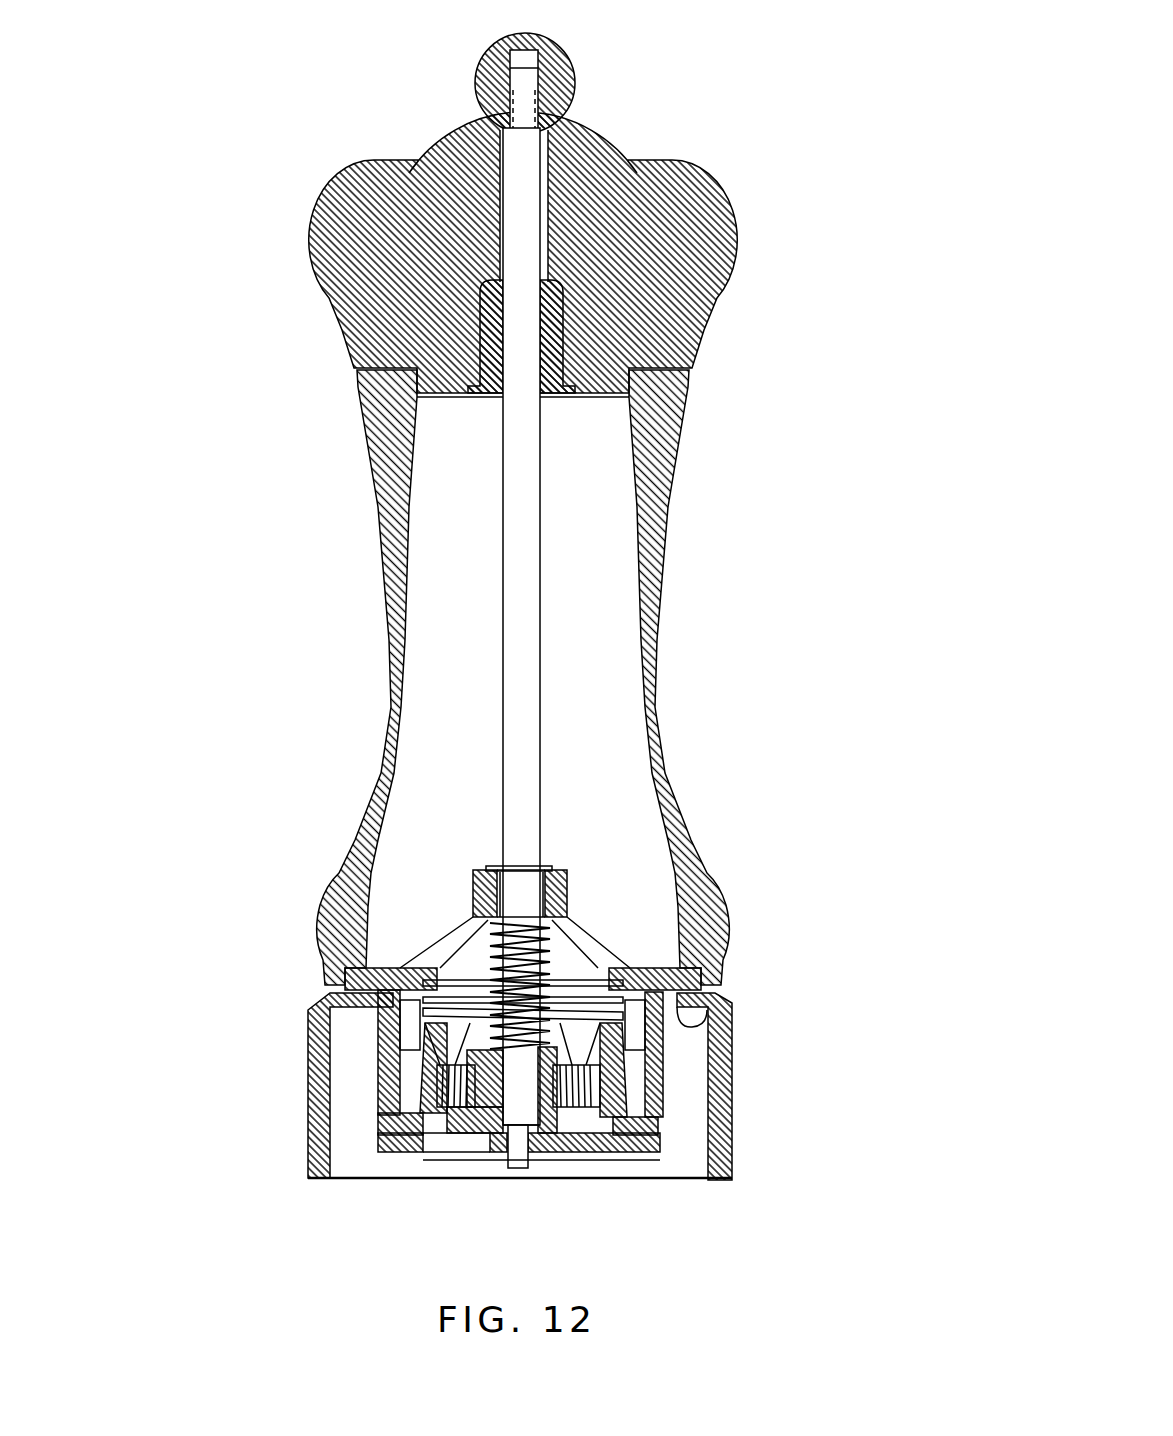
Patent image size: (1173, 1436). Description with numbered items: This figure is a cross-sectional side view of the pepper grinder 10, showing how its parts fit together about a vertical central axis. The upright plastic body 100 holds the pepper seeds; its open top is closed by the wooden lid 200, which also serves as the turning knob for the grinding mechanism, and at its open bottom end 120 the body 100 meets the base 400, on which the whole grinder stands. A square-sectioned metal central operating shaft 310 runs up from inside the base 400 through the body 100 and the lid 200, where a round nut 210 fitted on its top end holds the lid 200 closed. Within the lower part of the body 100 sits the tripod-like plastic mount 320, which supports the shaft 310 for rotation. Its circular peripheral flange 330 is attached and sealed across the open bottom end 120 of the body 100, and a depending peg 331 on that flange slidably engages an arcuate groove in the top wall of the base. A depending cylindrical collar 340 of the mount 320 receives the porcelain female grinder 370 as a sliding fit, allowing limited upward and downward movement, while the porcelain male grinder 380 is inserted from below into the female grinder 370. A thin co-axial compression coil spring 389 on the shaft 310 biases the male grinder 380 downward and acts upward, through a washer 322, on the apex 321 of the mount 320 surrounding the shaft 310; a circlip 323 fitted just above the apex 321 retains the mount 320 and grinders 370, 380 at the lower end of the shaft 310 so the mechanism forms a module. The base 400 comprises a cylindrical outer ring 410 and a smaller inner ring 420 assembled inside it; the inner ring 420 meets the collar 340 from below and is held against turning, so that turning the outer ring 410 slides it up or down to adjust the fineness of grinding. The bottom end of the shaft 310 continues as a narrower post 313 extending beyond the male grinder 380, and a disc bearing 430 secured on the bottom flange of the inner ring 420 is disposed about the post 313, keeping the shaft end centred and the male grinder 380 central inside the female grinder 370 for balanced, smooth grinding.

The pepper grinder 10 is at (733, 67).
The body 100 is at (655, 590).
The open bottom end 120 is at (322, 930).
The lid 200 is at (742, 232).
The round nut 210 is at (557, 50).
The central operating shaft 310 is at (527, 586).
The post 313 is at (520, 1165).
The mount 320 is at (576, 905).
The apex 321 is at (486, 870).
The washer 322 is at (552, 935).
The circlip 323 is at (548, 870).
The peripheral flange 330 is at (382, 970).
The peg 331 is at (692, 1009).
The collar 340 is at (665, 1040).
The female grinder 370 is at (400, 1038).
The male grinder 380 is at (463, 1113).
The compression coil spring 389 is at (552, 958).
The base 400 is at (735, 1090).
The outer ring 410 is at (697, 1180).
The inner ring 420 is at (660, 1130).
The disc bearing 430 is at (602, 1160).